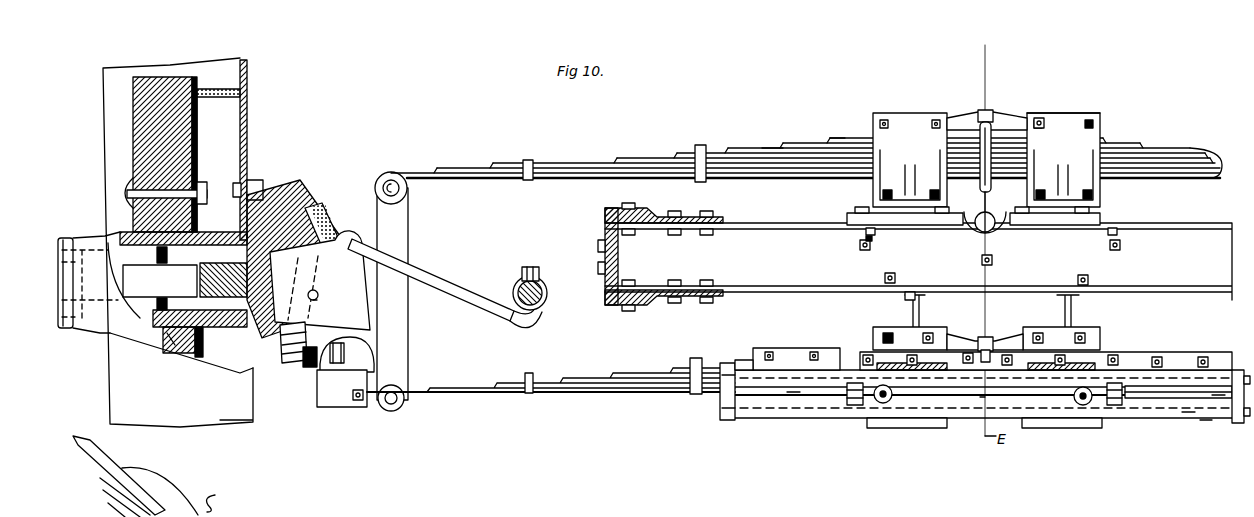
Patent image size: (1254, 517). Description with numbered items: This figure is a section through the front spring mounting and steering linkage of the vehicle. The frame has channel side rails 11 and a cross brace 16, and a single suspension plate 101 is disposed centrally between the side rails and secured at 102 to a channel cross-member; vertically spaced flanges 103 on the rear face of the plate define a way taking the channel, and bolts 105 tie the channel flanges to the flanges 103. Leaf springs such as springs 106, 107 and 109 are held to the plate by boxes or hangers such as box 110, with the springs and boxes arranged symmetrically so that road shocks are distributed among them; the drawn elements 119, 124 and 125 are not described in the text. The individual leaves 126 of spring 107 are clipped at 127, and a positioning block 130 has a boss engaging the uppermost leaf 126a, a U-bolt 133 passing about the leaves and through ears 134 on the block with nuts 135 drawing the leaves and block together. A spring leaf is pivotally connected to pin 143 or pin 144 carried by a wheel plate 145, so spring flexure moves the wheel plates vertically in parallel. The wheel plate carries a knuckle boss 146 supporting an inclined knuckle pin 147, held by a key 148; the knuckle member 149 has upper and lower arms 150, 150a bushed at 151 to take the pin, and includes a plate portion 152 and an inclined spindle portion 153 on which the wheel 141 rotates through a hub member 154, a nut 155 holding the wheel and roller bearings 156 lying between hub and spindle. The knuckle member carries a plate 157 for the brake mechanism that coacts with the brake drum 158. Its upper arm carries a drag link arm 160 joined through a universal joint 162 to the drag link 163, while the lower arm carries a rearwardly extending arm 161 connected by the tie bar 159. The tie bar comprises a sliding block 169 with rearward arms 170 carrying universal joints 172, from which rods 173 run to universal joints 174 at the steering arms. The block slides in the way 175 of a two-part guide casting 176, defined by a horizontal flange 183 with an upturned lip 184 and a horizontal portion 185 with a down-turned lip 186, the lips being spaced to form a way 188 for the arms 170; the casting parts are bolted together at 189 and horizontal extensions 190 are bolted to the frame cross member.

The wheel 141 is at (120, 72).
The brake drum 158 is at (245, 77).
The plate 157 is at (248, 120).
The plate portion 152 is at (253, 180).
The hub member 154 is at (214, 215).
The spindle portion 153 is at (180, 378).
The nut 155 is at (75, 330).
The roller bearings 156 is at (167, 333).
The knuckle member 149 is at (277, 210).
The upper arm 150 is at (302, 207).
The knuckle pin 147 is at (308, 220).
The knuckle boss 146 is at (317, 292).
The key 148 is at (318, 301).
The lower arm 150a is at (272, 352).
The bushing 151 is at (303, 367).
The rearwardly extending arm 161 is at (353, 343).
The universal joint 174 is at (348, 397).
The wheel plate 145 is at (393, 242).
The pin 143 is at (398, 172).
The pin 144 is at (407, 405).
The leaves 126 is at (633, 162).
The spring 107 is at (762, 147).
The uppermost leaf 126a is at (843, 137).
The clip 127 is at (528, 160).
The cross brace 16 is at (770, 240).
The channel side rails 11 is at (600, 253).
The clamp housing 119 is at (1122, 127).
The positioning block 130 is at (1012, 120).
The nuts 135 is at (985, 110).
The ears 134 is at (991, 122).
The U-bolt 133 is at (990, 207).
The bolt 124 is at (1040, 118).
The box or hanger 110 is at (1070, 114).
The bracket plate 125 is at (1058, 296).
The flanges 103 is at (862, 170).
The bolts 105 is at (1118, 277).
The spring 106 is at (869, 234).
The securing means 102 is at (982, 260).
The tie bar 159 is at (598, 393).
The spring 109 is at (633, 370).
The horizontal flange 183 is at (805, 413).
The horizontal portion 185 is at (1172, 357).
The bolts 189 is at (860, 355).
The suspension plate 101 is at (1110, 353).
The horizontal extensions 190 is at (1047, 333).
The universal joints 172 is at (868, 417).
The posts or arms 170 is at (1082, 405).
The way 175 is at (1153, 402).
The down-turned lip 186 is at (1198, 383).
The way 188 is at (938, 397).
The sliding block 169 is at (980, 397).
The rods 173 is at (787, 392).
The upturned lip 184 is at (1182, 412).
The guide casting 176 is at (1200, 420).
The drag link arm 160 is at (432, 280).
The universal joint 162 is at (548, 302).
The drag link 163 is at (513, 290).